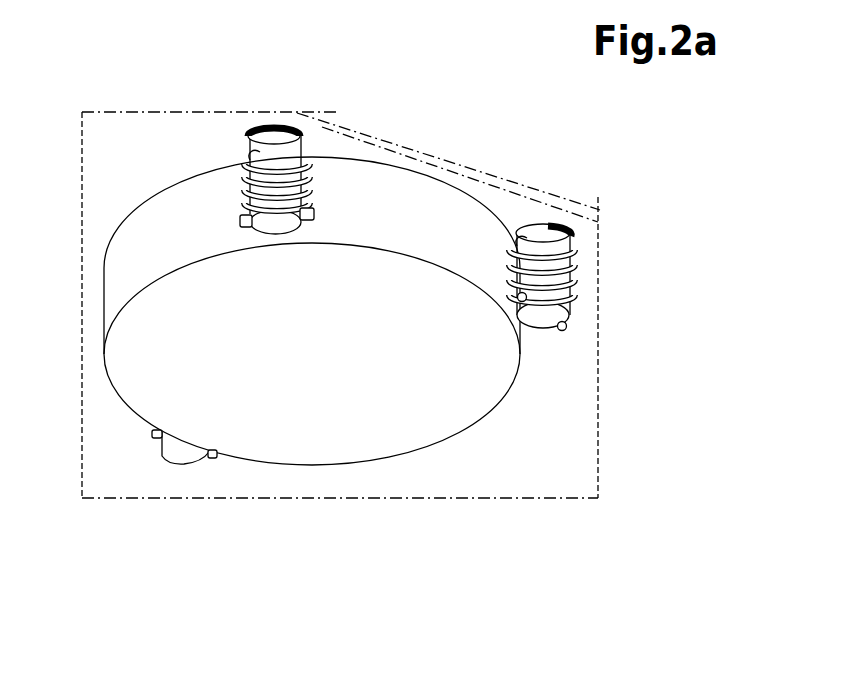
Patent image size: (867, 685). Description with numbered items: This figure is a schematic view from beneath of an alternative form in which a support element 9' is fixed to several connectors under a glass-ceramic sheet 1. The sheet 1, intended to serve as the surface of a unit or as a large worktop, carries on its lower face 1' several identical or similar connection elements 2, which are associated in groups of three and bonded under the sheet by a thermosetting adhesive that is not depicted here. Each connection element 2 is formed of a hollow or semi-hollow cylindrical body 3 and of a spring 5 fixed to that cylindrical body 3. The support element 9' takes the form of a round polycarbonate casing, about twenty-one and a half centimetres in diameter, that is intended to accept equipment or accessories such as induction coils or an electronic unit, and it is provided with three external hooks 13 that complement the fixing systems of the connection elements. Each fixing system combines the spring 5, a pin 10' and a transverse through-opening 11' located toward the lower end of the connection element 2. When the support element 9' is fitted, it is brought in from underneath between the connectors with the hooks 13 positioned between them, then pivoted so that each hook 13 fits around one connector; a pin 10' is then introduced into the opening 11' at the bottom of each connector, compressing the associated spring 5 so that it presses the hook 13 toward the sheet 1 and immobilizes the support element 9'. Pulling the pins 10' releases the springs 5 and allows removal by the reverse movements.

The glass-ceramic sheet 1 is at (341, 287).
The connection element 2 is at (389, 290).
The cylindrical body 3 is at (265, 147).
The spring 5 is at (247, 195).
The external hook 13 is at (283, 127).
The lower face 1' is at (327, 358).
The support element 9' is at (312, 358).
The pin 10' is at (407, 388).
The transverse through-opening 11' is at (269, 269).